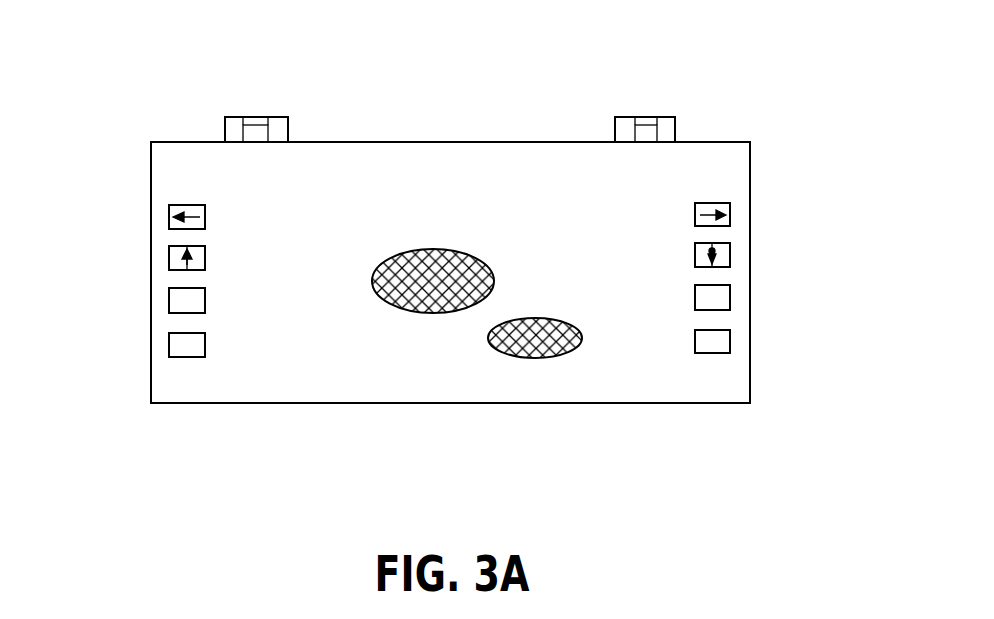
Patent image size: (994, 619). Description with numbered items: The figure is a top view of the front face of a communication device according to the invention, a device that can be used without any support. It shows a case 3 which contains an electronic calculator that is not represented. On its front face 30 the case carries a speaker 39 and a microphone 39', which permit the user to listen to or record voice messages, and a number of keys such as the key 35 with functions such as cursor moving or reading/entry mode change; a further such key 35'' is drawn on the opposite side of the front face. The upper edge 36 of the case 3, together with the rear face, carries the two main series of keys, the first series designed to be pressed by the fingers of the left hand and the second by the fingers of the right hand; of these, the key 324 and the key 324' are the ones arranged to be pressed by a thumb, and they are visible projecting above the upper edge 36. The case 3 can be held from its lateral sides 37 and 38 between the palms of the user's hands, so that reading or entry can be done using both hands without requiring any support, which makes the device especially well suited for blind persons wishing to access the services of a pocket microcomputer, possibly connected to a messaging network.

The case 3 is at (760, 180).
The front face 30 is at (408, 205).
The upper edge 36 is at (348, 142).
The key 324 is at (626, 79).
The key 324' is at (231, 74).
The lateral side 38 is at (150, 297).
The lateral side 37 is at (750, 287).
The key 35 is at (185, 404).
The bottom right button 35'' is at (700, 407).
The speaker 39 is at (428, 361).
The microphone 39' is at (523, 396).